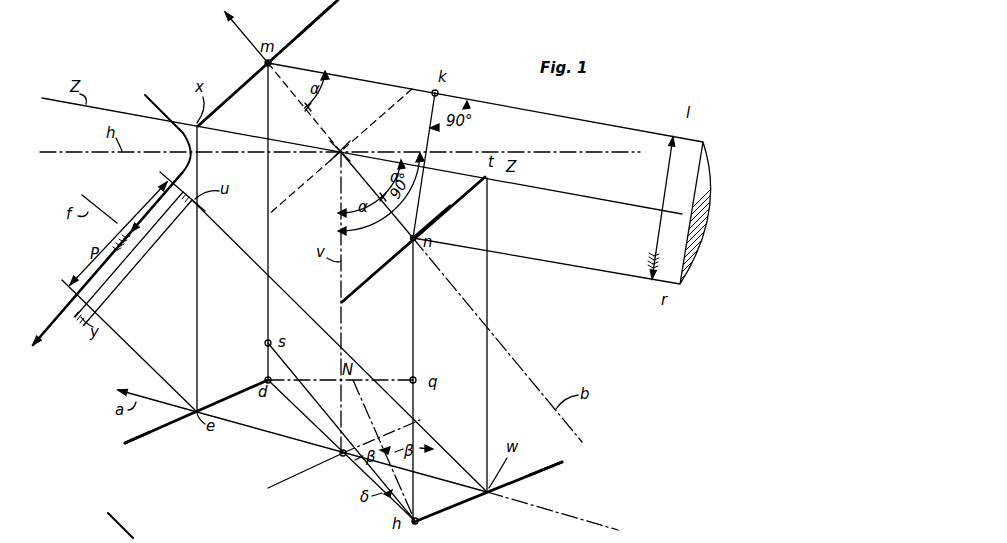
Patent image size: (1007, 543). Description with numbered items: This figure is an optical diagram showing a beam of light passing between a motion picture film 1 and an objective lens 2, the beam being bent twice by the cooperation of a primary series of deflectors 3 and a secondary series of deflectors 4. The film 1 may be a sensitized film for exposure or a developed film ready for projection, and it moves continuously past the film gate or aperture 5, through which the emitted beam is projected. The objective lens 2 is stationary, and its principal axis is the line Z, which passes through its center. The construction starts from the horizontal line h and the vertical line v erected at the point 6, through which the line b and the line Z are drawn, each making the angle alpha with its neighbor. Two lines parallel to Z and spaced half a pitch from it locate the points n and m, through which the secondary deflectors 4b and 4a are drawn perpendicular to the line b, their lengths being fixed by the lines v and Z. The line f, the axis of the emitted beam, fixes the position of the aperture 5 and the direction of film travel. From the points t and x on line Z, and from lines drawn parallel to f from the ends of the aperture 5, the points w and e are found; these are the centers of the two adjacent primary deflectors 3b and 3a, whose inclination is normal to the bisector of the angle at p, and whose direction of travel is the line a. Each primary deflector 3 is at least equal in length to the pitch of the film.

The motion picture film 1 is at (157, 100).
The objective lens 2 is at (681, 286).
The deflectors of the primary series 3 is at (158, 430).
The primary deflector 3a is at (126, 444).
The primary deflector 3b is at (540, 472).
The deflectors of the secondary series 4 is at (322, 14).
The secondary deflector 4a is at (303, 42).
The secondary deflector 4b is at (442, 216).
The film gate or aperture 5 is at (104, 283).
The point 6 is at (342, 149).